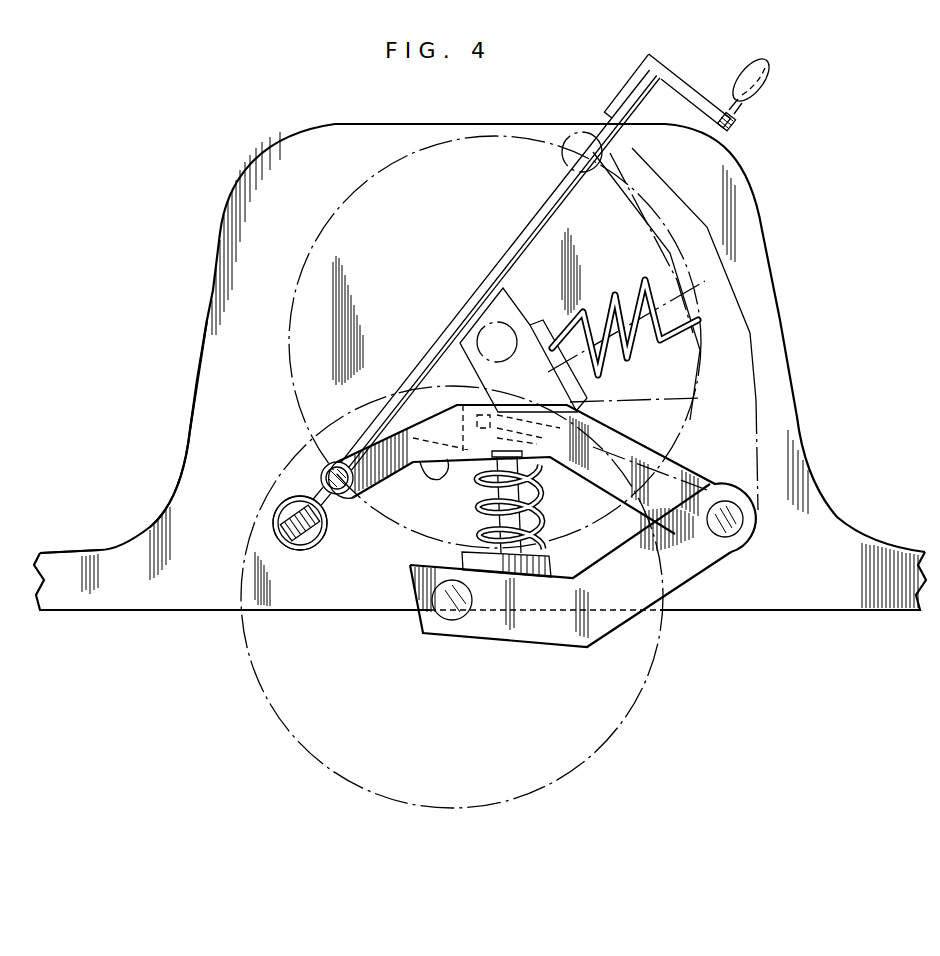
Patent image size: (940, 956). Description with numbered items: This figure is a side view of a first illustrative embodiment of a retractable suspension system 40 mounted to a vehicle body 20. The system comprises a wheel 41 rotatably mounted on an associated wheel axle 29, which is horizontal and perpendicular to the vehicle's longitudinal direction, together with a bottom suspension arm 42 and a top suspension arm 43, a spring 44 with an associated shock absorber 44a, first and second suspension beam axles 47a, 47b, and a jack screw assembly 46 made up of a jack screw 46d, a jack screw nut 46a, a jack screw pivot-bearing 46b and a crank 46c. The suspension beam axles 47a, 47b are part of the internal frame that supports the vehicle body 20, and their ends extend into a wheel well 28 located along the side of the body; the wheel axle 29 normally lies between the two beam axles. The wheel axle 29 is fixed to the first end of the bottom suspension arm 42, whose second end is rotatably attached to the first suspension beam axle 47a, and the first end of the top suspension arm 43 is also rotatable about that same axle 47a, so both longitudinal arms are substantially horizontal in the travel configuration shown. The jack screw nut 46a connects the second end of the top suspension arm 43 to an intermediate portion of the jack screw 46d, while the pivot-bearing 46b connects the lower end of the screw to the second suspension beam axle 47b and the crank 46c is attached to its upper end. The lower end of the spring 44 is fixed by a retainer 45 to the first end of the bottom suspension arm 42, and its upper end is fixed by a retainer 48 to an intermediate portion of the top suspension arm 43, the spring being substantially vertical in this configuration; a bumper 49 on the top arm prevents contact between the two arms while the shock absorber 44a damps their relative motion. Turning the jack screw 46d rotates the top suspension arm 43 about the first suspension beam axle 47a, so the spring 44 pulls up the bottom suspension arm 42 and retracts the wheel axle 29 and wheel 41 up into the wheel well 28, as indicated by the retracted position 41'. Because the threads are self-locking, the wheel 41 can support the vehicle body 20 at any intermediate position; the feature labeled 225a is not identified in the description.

The vehicle body 20 is at (893, 547).
The base surface 225a is at (92, 600).
The wheel well 28 is at (192, 405).
The wheel axle 29 is at (448, 622).
The retractable suspension system 40 is at (176, 314).
The wheel 41 is at (443, 597).
The retracted position of the wheel 41' is at (494, 342).
The bottom suspension arm 42 is at (525, 638).
The top suspension arm 43 is at (630, 442).
The spring 44 is at (480, 504).
The shock absorber 44a is at (528, 512).
The retainer 45 is at (549, 562).
The jack screw assembly 46 is at (469, 307).
The jack screw nut 46a is at (326, 468).
The jack screw pivot-bearing 46b is at (322, 526).
The crank 46c is at (765, 64).
The jack screw 46d is at (541, 213).
The first suspension beam axle 47a is at (745, 522).
The second suspension beam axle 47b is at (307, 552).
The retainer 48 is at (580, 412).
The bumper 49 is at (440, 479).